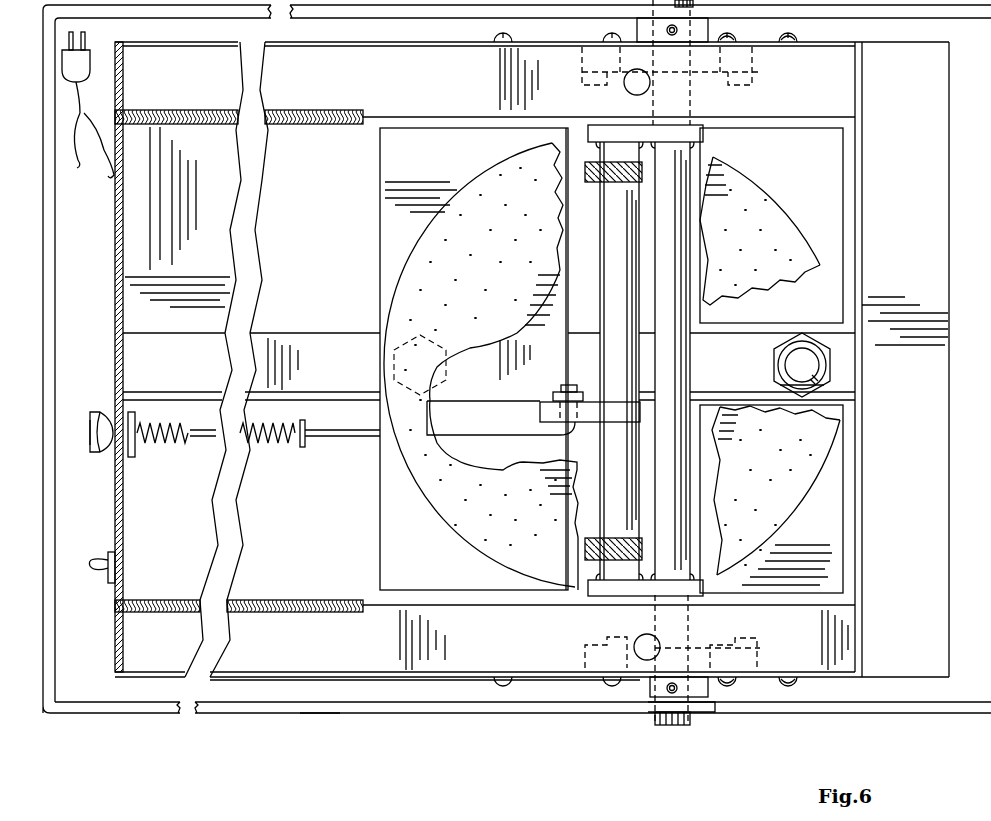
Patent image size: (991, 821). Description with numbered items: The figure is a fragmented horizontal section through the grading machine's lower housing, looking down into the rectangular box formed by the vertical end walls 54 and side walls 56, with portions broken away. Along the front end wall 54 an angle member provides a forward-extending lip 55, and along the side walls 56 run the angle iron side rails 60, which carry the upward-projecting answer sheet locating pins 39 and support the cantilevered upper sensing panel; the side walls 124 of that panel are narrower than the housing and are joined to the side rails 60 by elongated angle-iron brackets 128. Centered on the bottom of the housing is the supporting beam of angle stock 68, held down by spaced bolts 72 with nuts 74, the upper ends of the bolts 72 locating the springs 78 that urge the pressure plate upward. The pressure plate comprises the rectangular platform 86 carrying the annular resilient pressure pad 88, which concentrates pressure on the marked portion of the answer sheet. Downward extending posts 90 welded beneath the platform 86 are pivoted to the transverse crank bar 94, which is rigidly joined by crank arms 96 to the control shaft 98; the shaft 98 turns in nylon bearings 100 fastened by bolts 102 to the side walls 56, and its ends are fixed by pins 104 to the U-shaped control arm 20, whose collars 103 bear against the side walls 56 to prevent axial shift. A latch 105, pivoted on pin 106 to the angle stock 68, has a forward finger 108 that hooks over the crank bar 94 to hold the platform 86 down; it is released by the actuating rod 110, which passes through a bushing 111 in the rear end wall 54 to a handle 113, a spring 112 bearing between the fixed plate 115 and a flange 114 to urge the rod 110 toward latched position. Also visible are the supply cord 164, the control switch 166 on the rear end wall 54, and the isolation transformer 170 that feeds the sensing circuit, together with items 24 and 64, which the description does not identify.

The control arm 20 is at (178, 12).
The cabinet 24 is at (320, 767).
The answer sheet locating pins 39 is at (637, 82).
The end wall 54 is at (862, 90).
The lip 55 is at (889, 264).
The side wall 56 is at (290, 680).
The side rail 60 is at (424, 96).
The screw 64 is at (495, 36).
The angle stock 68 is at (325, 347).
The bolt 72 is at (790, 357).
The nut 74 is at (830, 350).
The spring 78 is at (825, 387).
The platform 86 is at (380, 238).
The pressure pad 88 is at (480, 530).
The post 90 is at (604, 178).
The crank bar 94 is at (615, 310).
The crank arm 96 is at (700, 133).
The control shaft 98 is at (674, 345).
The bearing 100 is at (745, 50).
The bolt 102 is at (730, 38).
The collar 103 is at (632, 22).
The pin 104 is at (677, 30).
The latch 105 is at (540, 410).
The pin 106 is at (568, 388).
The finger 108 is at (620, 408).
The actuating rod 110 is at (368, 440).
The bushing 111 is at (113, 443).
The spring 112 is at (248, 448).
The handle 113 is at (88, 422).
The flange 114 is at (305, 447).
The fixed plate 115 is at (135, 455).
The side wall 124 is at (310, 110).
The bracket 128 is at (325, 124).
The supply cord 164 is at (87, 111).
The control switch 166 is at (100, 552).
The isolation transformer 170 is at (138, 212).